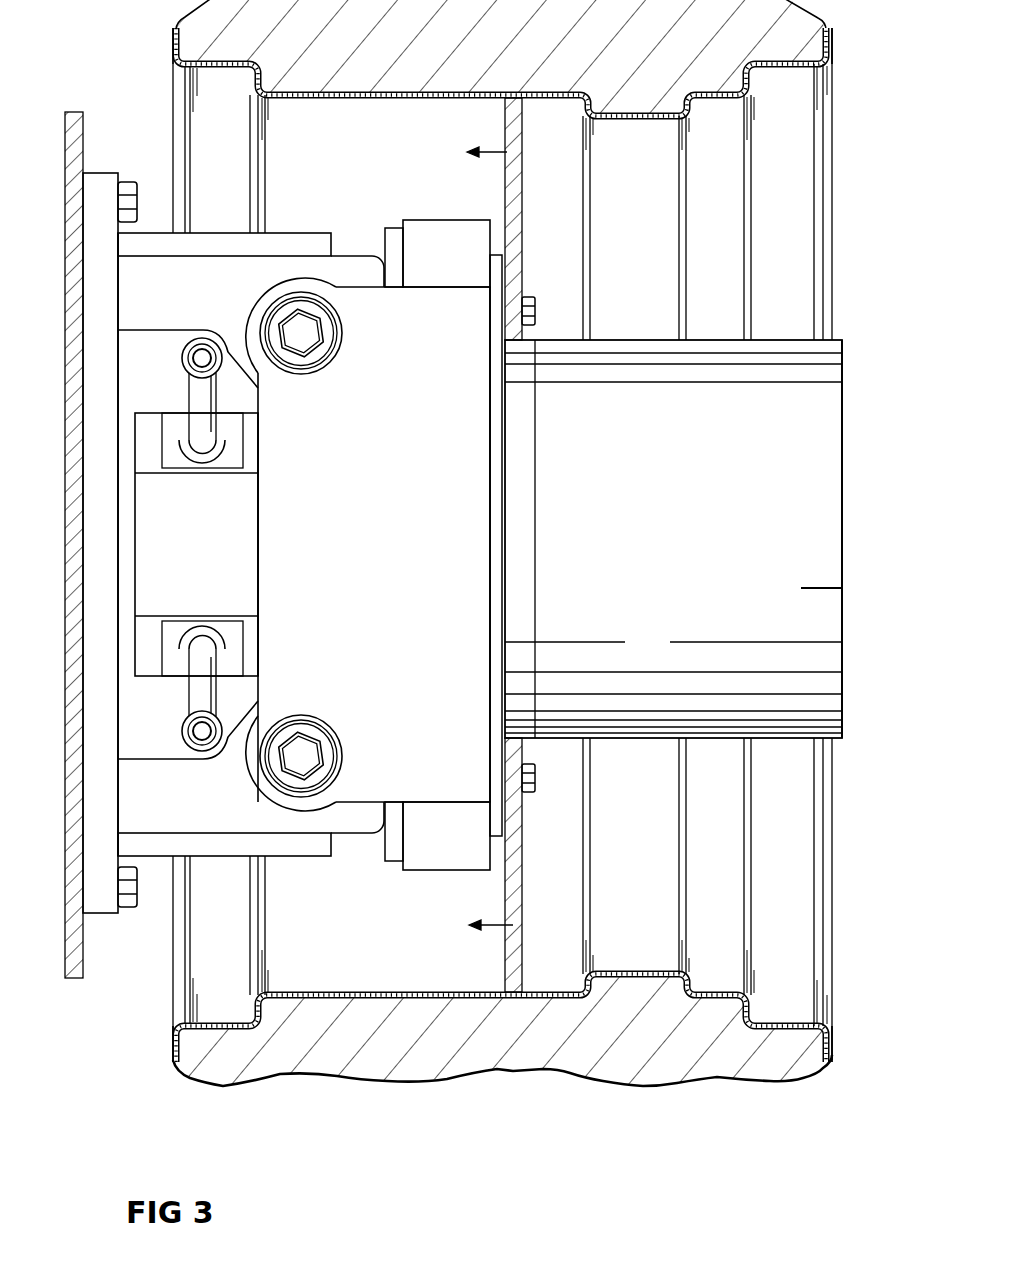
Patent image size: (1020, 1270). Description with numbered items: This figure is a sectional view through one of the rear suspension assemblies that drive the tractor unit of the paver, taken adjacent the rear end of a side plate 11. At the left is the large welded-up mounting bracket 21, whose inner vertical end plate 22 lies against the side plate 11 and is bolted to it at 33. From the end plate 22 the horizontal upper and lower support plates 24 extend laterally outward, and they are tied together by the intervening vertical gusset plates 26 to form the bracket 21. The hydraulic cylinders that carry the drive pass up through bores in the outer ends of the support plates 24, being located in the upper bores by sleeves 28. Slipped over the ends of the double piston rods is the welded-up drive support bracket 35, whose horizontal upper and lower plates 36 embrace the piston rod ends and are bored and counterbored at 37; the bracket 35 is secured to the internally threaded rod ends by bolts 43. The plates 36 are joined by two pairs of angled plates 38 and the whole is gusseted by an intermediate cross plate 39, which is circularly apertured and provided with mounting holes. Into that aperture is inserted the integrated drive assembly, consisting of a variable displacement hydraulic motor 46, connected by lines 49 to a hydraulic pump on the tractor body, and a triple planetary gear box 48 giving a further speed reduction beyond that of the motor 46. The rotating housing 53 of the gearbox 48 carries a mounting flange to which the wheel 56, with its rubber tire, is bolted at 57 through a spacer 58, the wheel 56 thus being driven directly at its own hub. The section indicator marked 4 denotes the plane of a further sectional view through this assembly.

The section line 4- 4 is at (490, 538).
The side plate 11 is at (68, 615).
The mounting bracket 21 is at (131, 293).
The inner vertical end plate 22 is at (92, 520).
The upper and lower support plates 24 is at (182, 262).
The vertical gusset plates 26 is at (285, 233).
The sleeves 28 is at (248, 320).
The bolts 33 is at (128, 182).
The drive support bracket 35 is at (378, 603).
The upper and lower plates 36 is at (257, 562).
The bores and counterbores 37 is at (312, 362).
The angled plates 38 is at (448, 222).
The cross plate 39 is at (395, 230).
The bolts 43 is at (328, 336).
The variable displacement hydraulic motor 46 is at (250, 517).
The triple planetary gear box 48 is at (720, 556).
The lines 49 is at (192, 388).
The rotating housing 53 is at (832, 488).
The wheel 56 is at (830, 40).
The bolts 57 is at (537, 310).
The spacer 58 is at (499, 498).